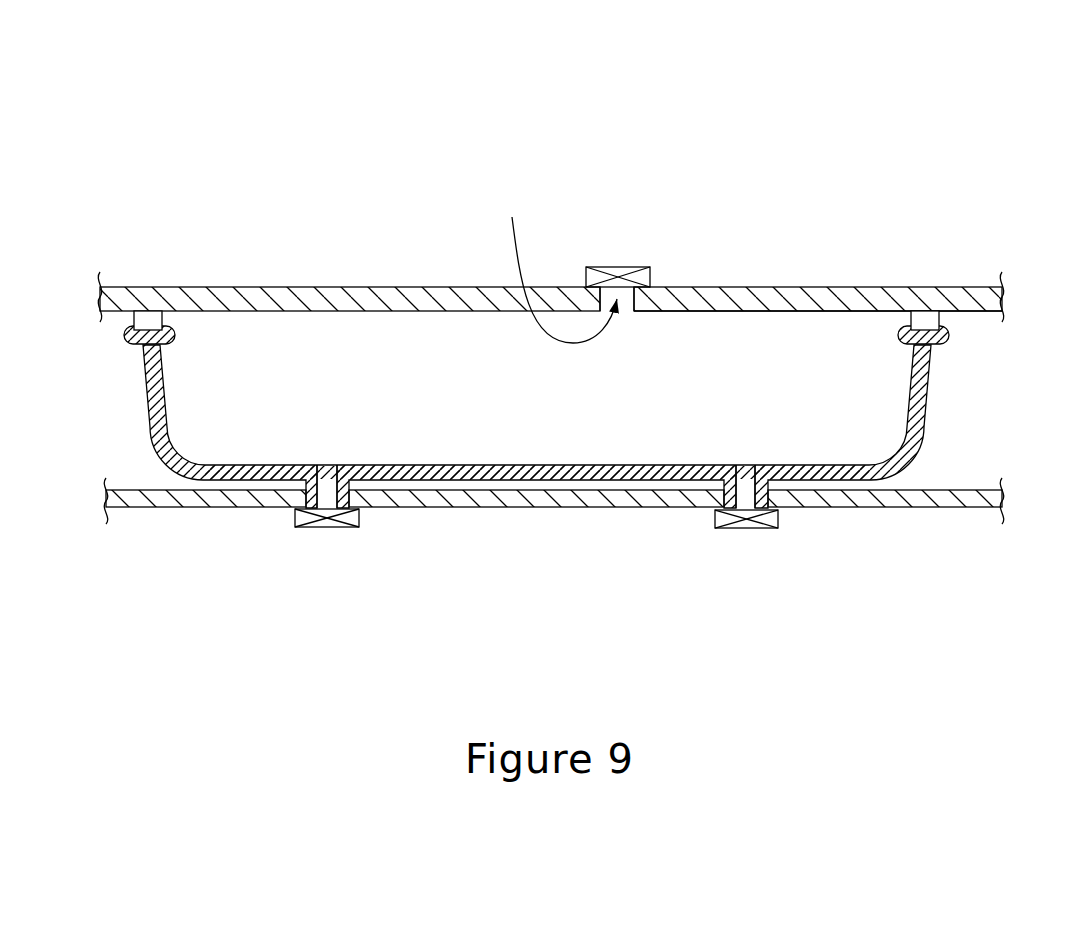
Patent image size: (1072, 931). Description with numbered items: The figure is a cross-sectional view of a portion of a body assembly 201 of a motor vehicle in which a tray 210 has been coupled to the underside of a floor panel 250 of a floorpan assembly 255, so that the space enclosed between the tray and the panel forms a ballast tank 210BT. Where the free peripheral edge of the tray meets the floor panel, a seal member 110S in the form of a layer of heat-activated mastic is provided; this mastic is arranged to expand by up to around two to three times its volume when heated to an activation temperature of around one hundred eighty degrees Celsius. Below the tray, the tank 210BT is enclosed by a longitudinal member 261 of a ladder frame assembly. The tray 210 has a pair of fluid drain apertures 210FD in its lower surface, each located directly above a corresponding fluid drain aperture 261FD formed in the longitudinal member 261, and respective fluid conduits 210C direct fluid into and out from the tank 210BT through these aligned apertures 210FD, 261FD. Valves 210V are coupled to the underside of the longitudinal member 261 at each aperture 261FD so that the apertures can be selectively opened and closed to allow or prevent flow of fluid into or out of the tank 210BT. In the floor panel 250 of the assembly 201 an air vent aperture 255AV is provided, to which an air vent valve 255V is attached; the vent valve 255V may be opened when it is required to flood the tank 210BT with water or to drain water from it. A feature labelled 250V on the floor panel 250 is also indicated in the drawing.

The body assembly 201 is at (80, 138).
The seal member 110S is at (150, 318).
The tray 210 is at (145, 388).
The fluid conduit 210C is at (311, 465).
The fluid drain aperture 210FD is at (326, 458).
The ballast tank 210BT is at (608, 395).
The valve 210V is at (325, 525).
The floor panel 250 is at (814, 287).
The plate via 250V is at (968, 313).
The floorpan assembly 255 is at (854, 303).
The air vent valve 255V is at (617, 265).
The air vent aperture 255AV is at (548, 269).
The longitudinal member 261 is at (160, 500).
The fluid drain aperture 261FD is at (329, 500).